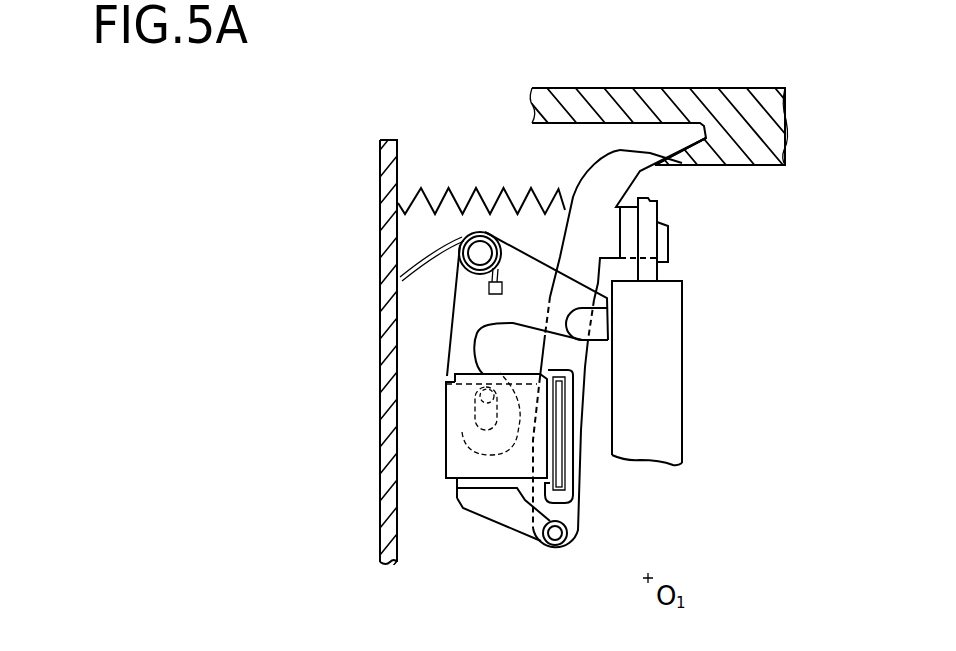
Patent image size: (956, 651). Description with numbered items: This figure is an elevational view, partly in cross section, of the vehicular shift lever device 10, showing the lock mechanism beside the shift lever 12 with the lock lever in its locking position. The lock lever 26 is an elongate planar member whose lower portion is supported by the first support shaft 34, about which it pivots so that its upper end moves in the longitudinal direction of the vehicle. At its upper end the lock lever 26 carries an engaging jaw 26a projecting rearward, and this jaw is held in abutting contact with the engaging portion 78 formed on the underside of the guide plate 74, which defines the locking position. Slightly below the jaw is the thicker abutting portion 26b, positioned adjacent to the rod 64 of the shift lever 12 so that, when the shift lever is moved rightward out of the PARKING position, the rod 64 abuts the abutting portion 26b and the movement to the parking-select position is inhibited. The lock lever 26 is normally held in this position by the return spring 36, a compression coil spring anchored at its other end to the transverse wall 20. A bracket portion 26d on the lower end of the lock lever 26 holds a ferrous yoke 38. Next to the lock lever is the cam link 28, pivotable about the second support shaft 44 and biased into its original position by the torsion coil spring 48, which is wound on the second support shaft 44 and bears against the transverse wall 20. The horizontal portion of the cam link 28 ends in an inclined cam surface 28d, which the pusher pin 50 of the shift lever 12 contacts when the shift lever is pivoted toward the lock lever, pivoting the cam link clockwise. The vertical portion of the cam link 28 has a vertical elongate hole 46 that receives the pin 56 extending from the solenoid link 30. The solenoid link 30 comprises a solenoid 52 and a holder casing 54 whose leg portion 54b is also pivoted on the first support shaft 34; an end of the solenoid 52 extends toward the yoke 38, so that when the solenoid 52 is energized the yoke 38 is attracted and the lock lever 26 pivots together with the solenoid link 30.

The vehicular shift lever device 10 is at (443, 75).
The shift lever 12 is at (697, 439).
The transverse wall 20 is at (380, 522).
The lock lever 26 is at (565, 180).
The engaging jaw 26a is at (656, 158).
The abutting portion 26b is at (668, 244).
The bracket portion 26d is at (570, 438).
The cam link 28 is at (428, 320).
The cam surface 28d is at (590, 303).
The solenoid link 30 is at (456, 537).
The first support shaft 34 is at (553, 534).
The return spring 36 is at (437, 188).
The yoke 38 is at (560, 483).
The second support shaft 44 is at (473, 232).
The elongate hole 46 is at (445, 385).
The torsion coil spring 48 is at (445, 242).
The pusher pin 50 is at (597, 327).
The solenoid 52 is at (450, 462).
The holder casing 54 is at (432, 442).
The leg portion 54b is at (510, 508).
The pin 56 is at (478, 405).
The rod 64 is at (650, 210).
The guide plate 74 is at (736, 108).
The engaging portion 78 is at (690, 160).